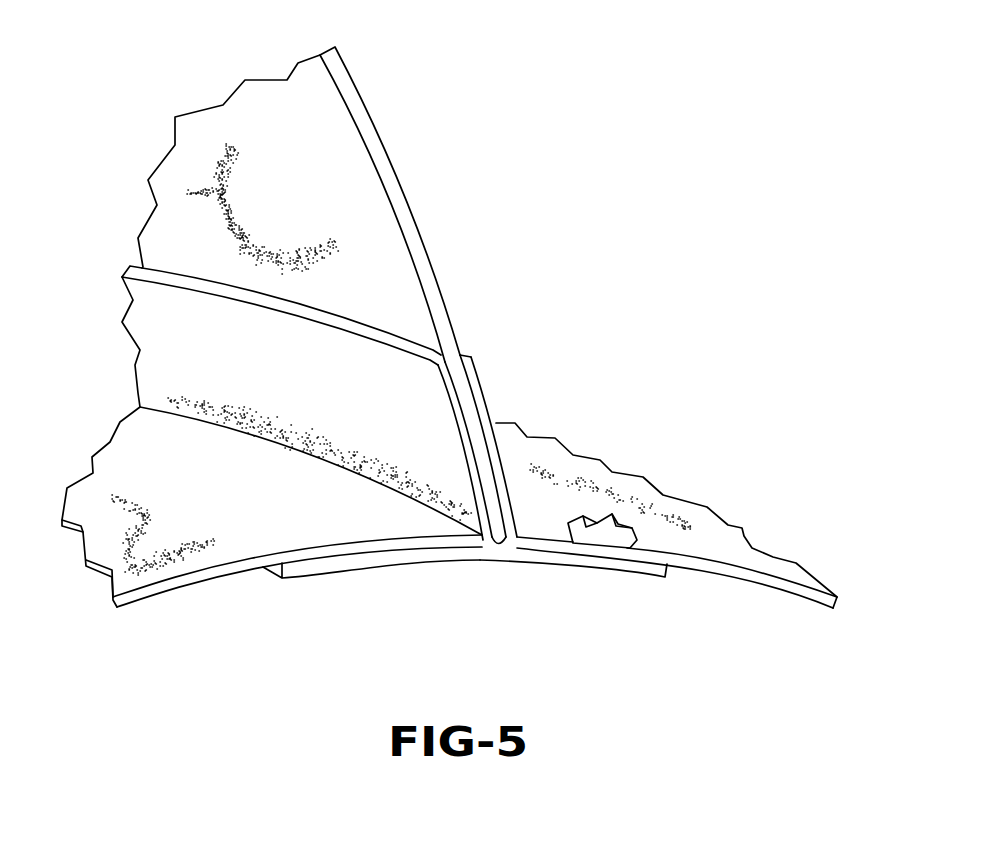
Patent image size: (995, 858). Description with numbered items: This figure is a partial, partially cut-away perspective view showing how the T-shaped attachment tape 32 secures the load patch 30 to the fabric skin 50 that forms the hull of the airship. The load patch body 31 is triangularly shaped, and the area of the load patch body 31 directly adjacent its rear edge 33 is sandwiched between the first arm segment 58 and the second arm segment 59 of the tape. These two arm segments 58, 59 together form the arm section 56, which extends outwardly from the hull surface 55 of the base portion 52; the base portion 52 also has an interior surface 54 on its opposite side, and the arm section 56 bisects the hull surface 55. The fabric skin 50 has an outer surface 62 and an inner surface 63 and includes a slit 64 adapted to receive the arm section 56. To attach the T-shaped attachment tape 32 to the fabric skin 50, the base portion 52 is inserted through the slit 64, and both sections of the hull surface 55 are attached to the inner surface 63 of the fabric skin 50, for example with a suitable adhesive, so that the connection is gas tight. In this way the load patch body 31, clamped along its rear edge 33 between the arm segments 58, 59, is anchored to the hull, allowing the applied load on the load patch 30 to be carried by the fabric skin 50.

The load patch 30 is at (521, 102).
The load patch body 31 is at (403, 161).
The T-shaped attachment tape 32 is at (312, 577).
The rear edge 33 is at (512, 538).
The fabric skin 50 is at (131, 460).
The base portion 52 is at (543, 558).
The interior surface 54 is at (397, 566).
The hull surface 55 is at (602, 543).
The arm section 56 is at (498, 386).
The first arm segment 58 is at (354, 331).
The second arm segment 59 is at (463, 352).
The outer surface 62 is at (212, 516).
The inner surface 63 is at (189, 585).
The slit 64 is at (487, 548).